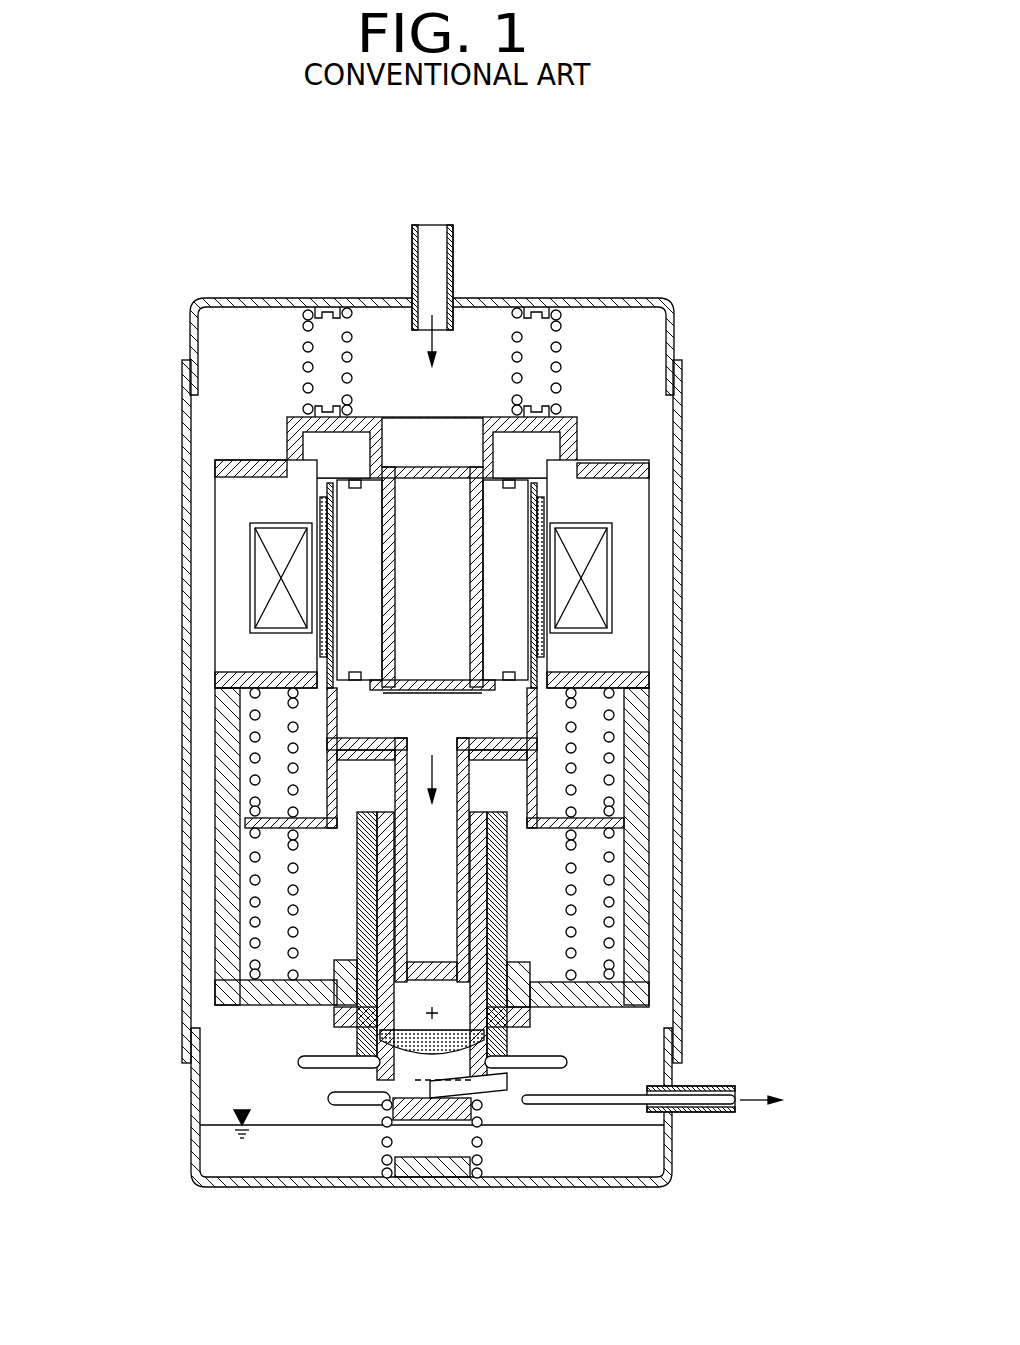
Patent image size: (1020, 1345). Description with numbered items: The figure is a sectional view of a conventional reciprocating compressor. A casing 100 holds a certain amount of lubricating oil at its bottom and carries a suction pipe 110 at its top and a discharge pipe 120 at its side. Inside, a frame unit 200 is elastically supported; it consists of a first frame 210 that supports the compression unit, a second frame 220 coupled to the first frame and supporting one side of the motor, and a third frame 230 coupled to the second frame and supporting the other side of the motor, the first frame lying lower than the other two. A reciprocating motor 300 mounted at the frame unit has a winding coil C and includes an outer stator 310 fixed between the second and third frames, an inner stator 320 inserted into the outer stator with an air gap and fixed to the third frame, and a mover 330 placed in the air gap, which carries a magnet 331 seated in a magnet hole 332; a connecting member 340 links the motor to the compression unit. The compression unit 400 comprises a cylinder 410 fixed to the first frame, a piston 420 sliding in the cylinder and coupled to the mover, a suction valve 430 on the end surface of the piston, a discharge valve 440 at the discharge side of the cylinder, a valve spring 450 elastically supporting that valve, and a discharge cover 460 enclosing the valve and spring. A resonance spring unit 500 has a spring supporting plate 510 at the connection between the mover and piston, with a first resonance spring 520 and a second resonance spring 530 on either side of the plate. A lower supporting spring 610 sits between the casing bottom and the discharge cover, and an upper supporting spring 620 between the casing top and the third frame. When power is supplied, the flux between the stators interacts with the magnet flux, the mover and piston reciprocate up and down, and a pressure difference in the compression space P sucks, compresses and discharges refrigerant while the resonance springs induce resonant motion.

The casing 100 is at (172, 418).
The suction pipe 110 is at (452, 252).
The discharge pipe 120 is at (713, 1083).
The frame unit 200 is at (526, 737).
The first frame 210 is at (496, 847).
The second frame 220 is at (662, 681).
The third frame 230 is at (655, 478).
The reciprocating motor 300 is at (347, 587).
The outer stator 310 is at (222, 582).
The inner stator 320 is at (345, 612).
The mover 330 is at (322, 648).
The magnet 331 is at (322, 517).
The magnet hole 332 is at (326, 490).
The connecting member 340 is at (355, 696).
The winding coil C is at (250, 548).
The compression unit 400 is at (308, 994).
The cylinder 410 is at (365, 906).
The piston 420 is at (382, 939).
The suction valve 430 is at (345, 1005).
The discharge valve 440 is at (372, 1058).
The valve spring 450 is at (378, 1090).
The discharge cover 460 is at (400, 1118).
The resonance spring unit 500 is at (543, 834).
The spring supporting plate 510 is at (640, 824).
The first resonance spring 520 is at (612, 878).
The second resonance spring 530 is at (612, 780).
The lower supporting spring 610 is at (370, 1156).
The upper supporting spring 620 is at (576, 346).
The compression space P is at (450, 1018).